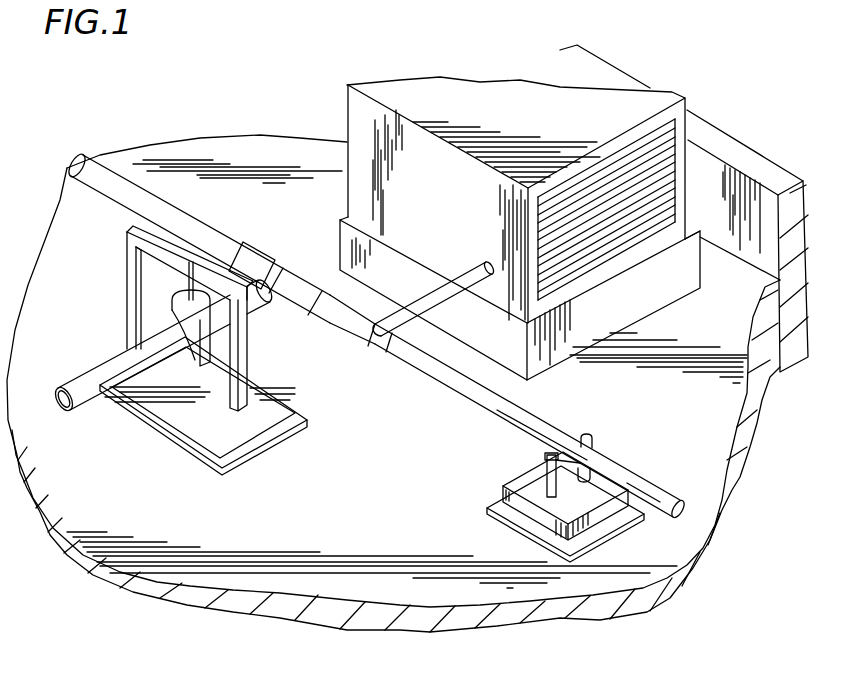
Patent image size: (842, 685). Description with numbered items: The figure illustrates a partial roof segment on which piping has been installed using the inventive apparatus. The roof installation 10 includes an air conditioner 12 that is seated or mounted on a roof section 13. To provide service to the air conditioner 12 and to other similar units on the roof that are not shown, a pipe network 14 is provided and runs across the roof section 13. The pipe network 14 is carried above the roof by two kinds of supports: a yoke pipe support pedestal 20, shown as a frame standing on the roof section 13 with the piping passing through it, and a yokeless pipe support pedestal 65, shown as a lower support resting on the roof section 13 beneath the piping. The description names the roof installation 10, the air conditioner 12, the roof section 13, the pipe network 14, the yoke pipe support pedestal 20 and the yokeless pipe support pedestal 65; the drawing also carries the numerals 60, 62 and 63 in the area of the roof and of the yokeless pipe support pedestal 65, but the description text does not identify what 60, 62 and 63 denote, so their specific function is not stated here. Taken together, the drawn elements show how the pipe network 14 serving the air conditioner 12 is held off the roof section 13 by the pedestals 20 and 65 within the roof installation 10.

The roof installation 10 is at (302, 97).
The air conditioner 12 is at (473, 110).
The roof section 13 is at (234, 165).
The pipe network 14 is at (88, 420).
The yoke pipe support pedestal 20 is at (277, 450).
The roof 60 is at (560, 575).
The base plate 62 is at (525, 533).
The support block 63 is at (513, 487).
The yokeless pipe support pedestal 65 is at (602, 449).